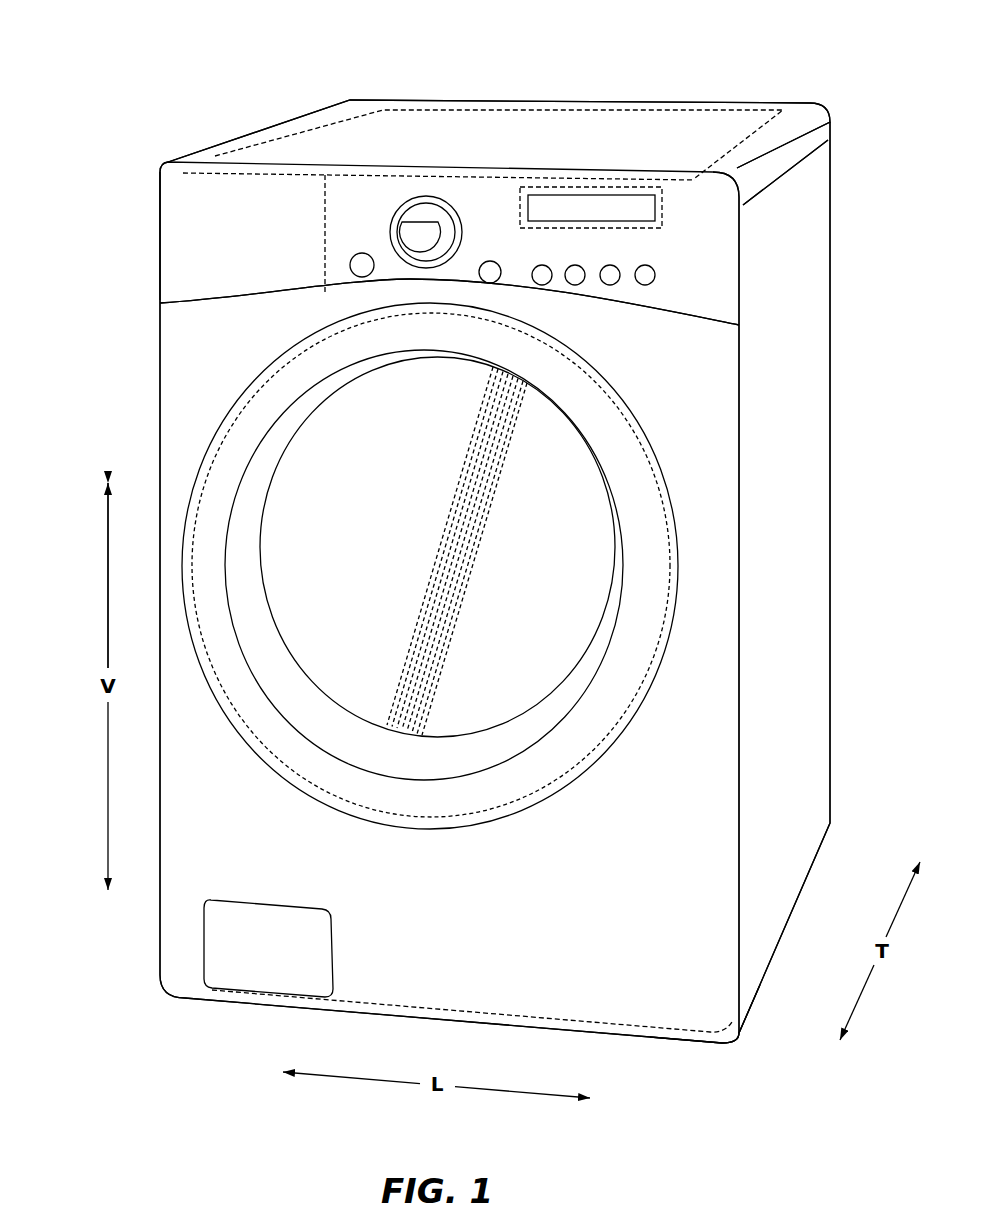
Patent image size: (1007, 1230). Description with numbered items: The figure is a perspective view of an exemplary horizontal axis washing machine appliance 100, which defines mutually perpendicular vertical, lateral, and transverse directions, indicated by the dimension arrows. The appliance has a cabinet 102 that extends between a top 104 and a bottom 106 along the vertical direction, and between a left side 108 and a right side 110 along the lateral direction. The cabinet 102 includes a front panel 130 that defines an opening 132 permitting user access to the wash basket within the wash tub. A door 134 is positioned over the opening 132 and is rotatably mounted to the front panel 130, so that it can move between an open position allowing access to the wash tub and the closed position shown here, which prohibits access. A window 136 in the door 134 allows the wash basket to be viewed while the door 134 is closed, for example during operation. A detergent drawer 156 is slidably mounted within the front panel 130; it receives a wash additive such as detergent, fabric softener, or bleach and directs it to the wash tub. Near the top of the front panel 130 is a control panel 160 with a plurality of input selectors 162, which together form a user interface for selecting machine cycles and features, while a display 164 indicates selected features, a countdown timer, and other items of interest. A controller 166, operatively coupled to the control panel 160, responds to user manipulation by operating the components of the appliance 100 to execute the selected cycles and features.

The washing machine appliance 100 is at (135, 75).
The cabinet 102 is at (808, 413).
The top 104 is at (845, 110).
The bottom 106 is at (828, 880).
The left side 108 is at (165, 1003).
The right side 110 is at (735, 1043).
The front panel 130 is at (180, 367).
The opening 132 is at (640, 420).
The door 134 is at (653, 523).
The window 136 is at (379, 501).
The detergent drawer 156 is at (180, 203).
The control panel 160 is at (497, 205).
The input selectors 162 is at (418, 222).
The display 164 is at (603, 205).
The controller 166 is at (580, 190).